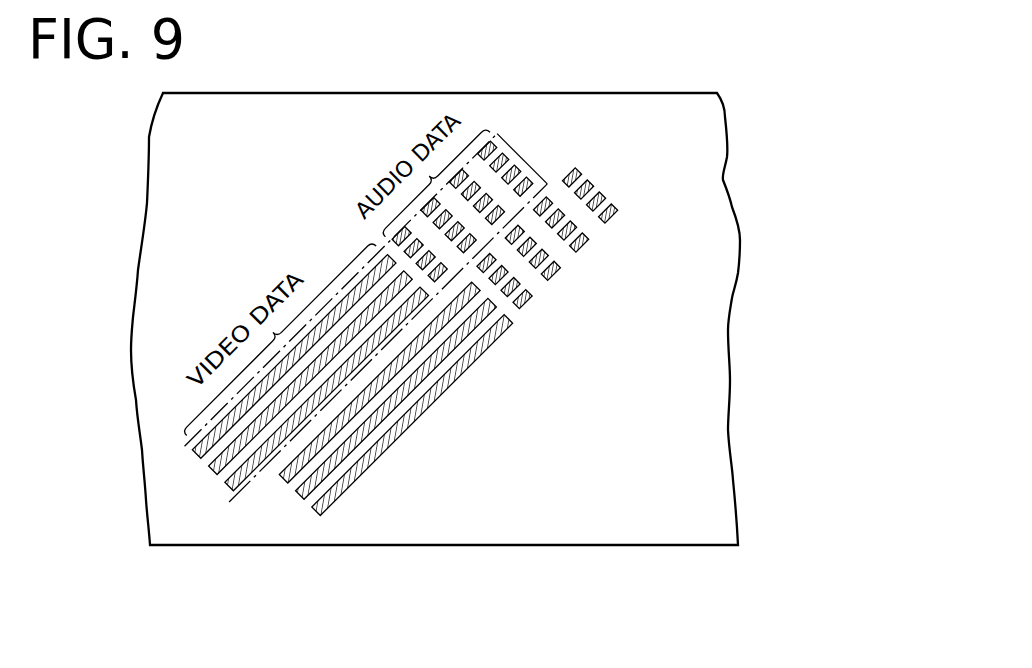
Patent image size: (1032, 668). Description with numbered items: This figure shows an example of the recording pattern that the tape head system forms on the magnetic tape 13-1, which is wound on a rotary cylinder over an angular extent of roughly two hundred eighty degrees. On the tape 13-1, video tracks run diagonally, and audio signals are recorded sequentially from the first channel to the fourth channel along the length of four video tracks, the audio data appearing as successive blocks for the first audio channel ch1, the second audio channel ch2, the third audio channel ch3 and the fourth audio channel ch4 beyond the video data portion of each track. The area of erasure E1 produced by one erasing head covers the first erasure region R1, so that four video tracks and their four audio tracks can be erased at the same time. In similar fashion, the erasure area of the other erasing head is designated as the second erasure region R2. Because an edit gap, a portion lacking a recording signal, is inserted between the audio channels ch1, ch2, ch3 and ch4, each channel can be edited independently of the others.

The magnetic tape 13-1 is at (668, 93).
The area of erasure E1 is at (497, 133).
The first erasure region R1 is at (351, 331).
The second erasure region R2 is at (473, 357).
The audio channel 1 ch1 is at (526, 303).
The audio channel 2 ch2 is at (554, 275).
The audio channel 3 ch3 is at (583, 247).
The audio channel 4 ch4 is at (613, 216).